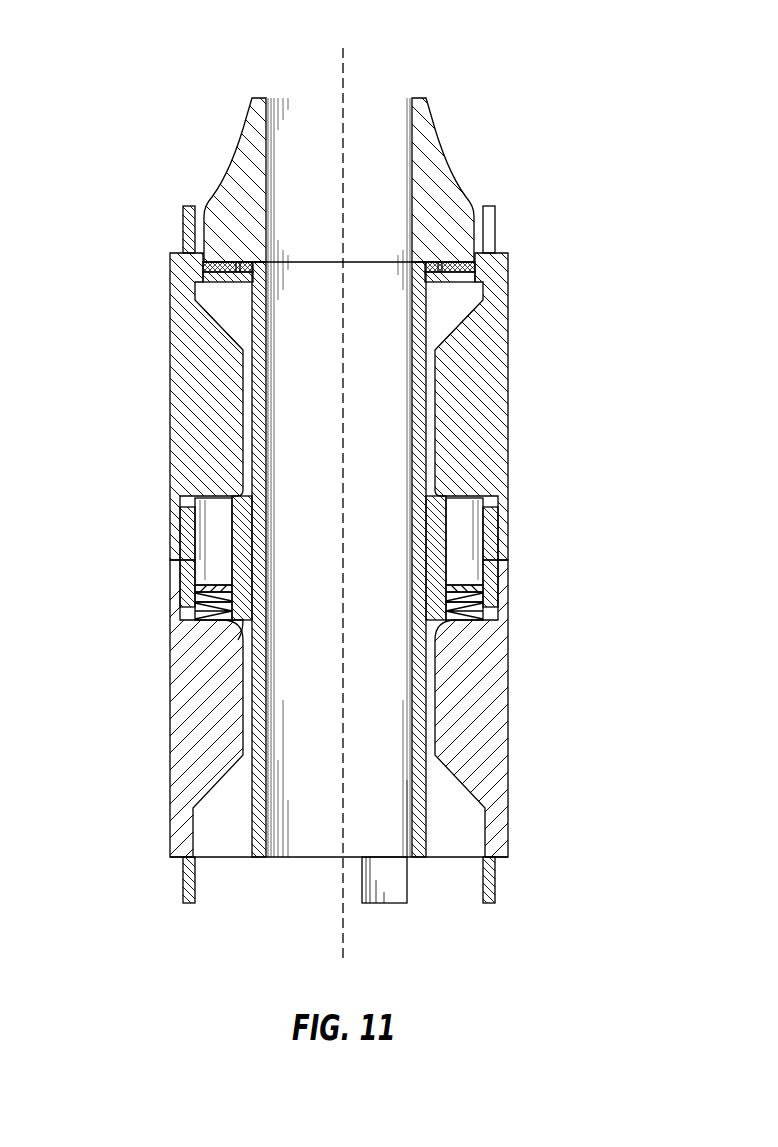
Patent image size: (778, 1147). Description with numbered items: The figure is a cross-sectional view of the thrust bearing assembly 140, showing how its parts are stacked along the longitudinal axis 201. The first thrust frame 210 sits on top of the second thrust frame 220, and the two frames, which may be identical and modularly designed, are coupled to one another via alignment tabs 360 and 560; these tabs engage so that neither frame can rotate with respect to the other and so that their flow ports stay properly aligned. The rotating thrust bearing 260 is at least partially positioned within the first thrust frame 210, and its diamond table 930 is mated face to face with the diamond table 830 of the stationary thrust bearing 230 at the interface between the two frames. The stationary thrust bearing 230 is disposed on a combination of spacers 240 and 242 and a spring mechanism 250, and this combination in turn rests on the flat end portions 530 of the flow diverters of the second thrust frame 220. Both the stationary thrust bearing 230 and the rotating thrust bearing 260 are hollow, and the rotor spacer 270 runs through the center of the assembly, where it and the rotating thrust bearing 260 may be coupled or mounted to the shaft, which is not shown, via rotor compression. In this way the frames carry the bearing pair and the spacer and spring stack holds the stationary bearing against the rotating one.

The thrust bearing assembly 140 is at (119, 134).
The longitudinal axis 201 is at (343, 62).
The rotating thrust bearing 260 is at (422, 138).
The diamond table 830 is at (472, 278).
The diamond table 930 is at (208, 280).
The first thrust frame 210 is at (493, 325).
The stationary thrust bearing 230 is at (458, 523).
The spacer 240 is at (450, 592).
The spacer 242 is at (450, 615).
The spring mechanism 250 is at (478, 605).
The alignment tabs 360 is at (170, 527).
The alignment tabs 560 is at (180, 590).
The second thrust frame 220 is at (180, 687).
The flat end portions 530 is at (218, 620).
The rotor spacer 270 is at (258, 847).